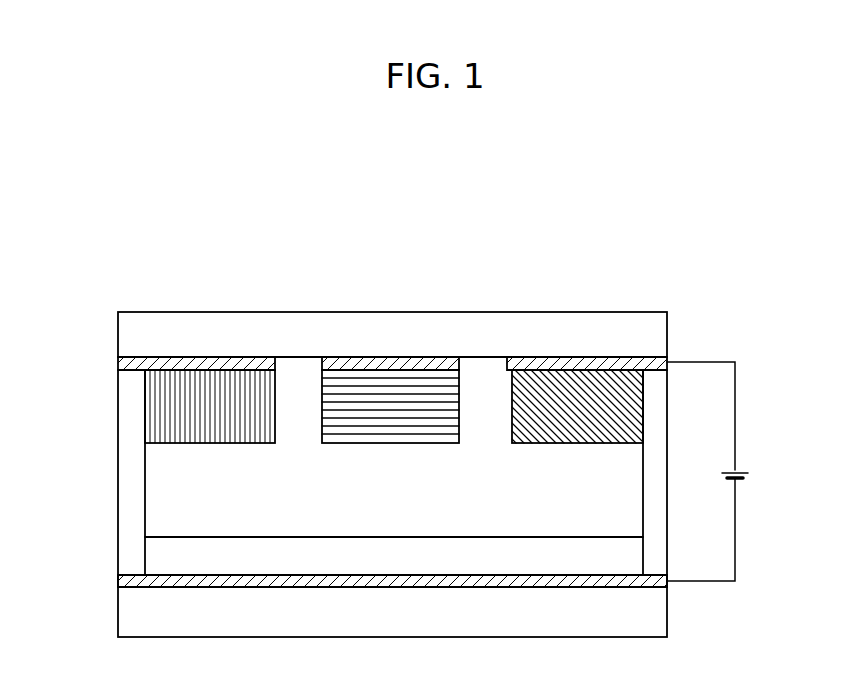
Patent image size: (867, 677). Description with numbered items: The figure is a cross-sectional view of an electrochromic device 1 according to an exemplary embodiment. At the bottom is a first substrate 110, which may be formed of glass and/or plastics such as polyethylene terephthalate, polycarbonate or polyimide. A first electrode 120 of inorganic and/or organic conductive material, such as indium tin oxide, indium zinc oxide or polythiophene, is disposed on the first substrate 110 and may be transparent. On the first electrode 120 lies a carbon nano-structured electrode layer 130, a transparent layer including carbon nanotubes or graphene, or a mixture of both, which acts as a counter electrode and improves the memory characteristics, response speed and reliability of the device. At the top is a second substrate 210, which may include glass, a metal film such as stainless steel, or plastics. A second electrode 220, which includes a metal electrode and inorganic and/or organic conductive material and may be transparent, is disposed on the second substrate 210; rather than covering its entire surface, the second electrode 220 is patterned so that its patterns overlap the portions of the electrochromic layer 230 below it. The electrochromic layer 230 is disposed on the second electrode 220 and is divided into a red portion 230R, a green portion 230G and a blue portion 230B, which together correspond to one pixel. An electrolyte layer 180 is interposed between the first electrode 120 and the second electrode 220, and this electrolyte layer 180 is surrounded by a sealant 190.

The electrochromic device 1 is at (392, 416).
The first substrate 110 is at (650, 619).
The first electrode 120 is at (118, 581).
The carbon nano-structured electrode layer 130 is at (147, 549).
The electrolyte layer 180 is at (147, 470).
The sealant 190 is at (655, 403).
The second substrate 210 is at (652, 337).
The second electrode 220 is at (118, 360).
The electrochromic layer 230 is at (359, 425).
The red portion 230R is at (152, 448).
The green portion 230G is at (330, 448).
The blue portion 230B is at (518, 448).